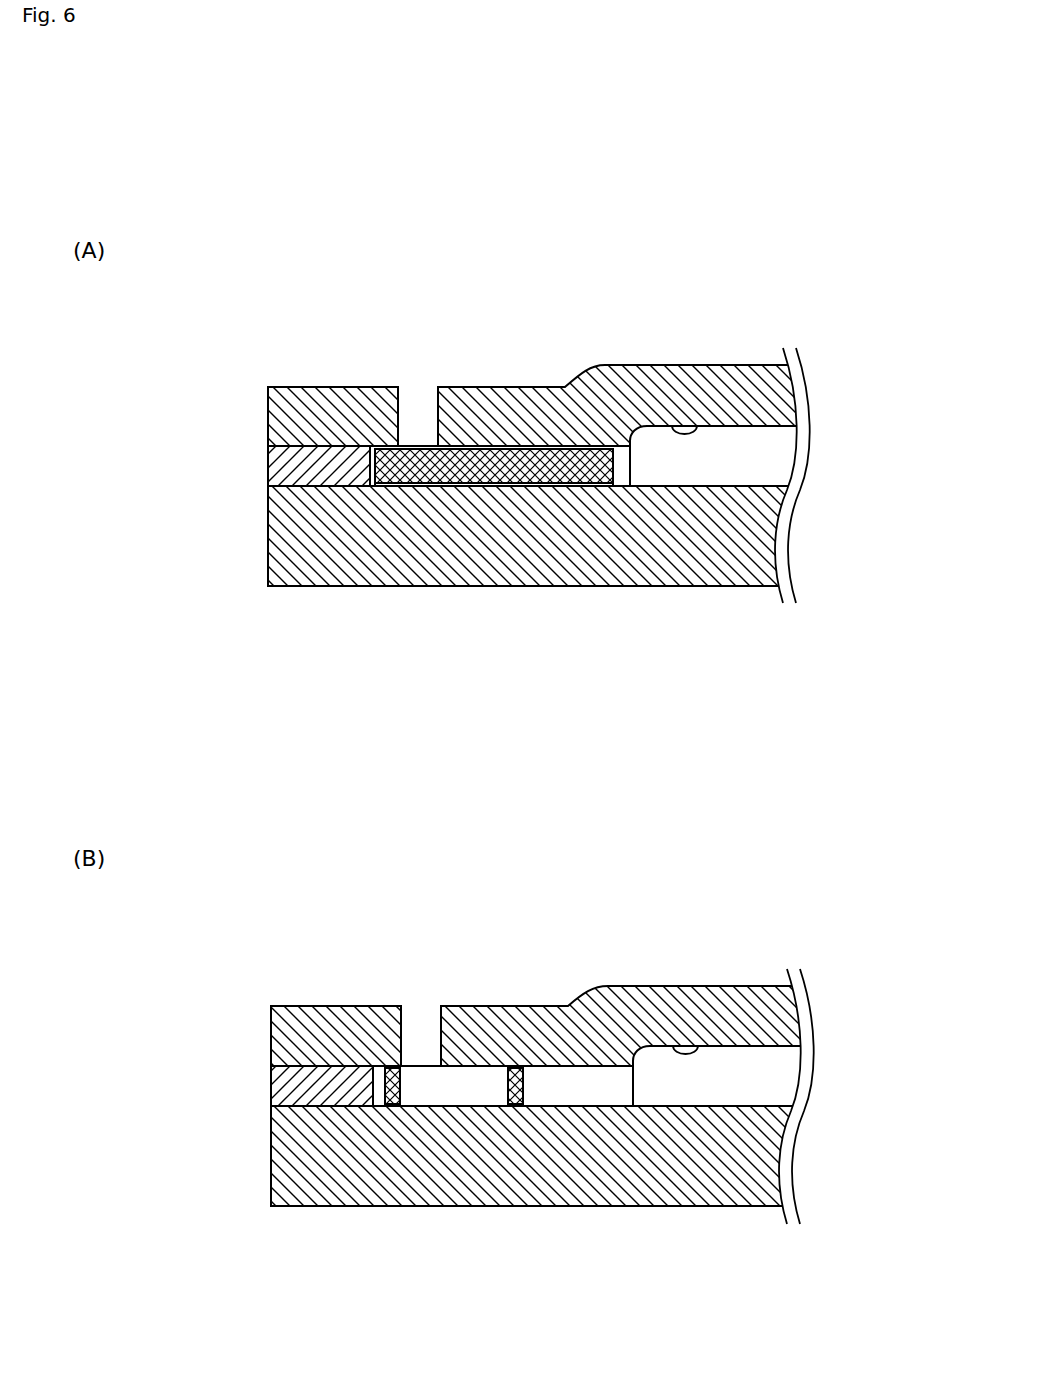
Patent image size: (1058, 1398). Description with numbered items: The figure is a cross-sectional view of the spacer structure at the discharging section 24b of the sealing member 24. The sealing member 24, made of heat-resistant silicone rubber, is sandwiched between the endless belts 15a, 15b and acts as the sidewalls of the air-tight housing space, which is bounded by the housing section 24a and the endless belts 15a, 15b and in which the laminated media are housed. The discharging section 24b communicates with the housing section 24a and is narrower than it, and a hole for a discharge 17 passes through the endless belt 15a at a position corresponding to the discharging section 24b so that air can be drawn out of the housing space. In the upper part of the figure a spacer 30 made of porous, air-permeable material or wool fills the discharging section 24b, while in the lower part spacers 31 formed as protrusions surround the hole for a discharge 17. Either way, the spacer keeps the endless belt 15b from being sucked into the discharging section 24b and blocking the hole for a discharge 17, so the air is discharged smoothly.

The endless belt 15a is at (610, 408).
The endless belt 15b is at (535, 538).
The hole for a discharge 17 is at (417, 417).
The sealing member 24 is at (283, 466).
The housing section 24a is at (685, 426).
The discharging section 24b is at (556, 457).
The spacer 30 is at (403, 465).
The spacer 31 is at (397, 1103).